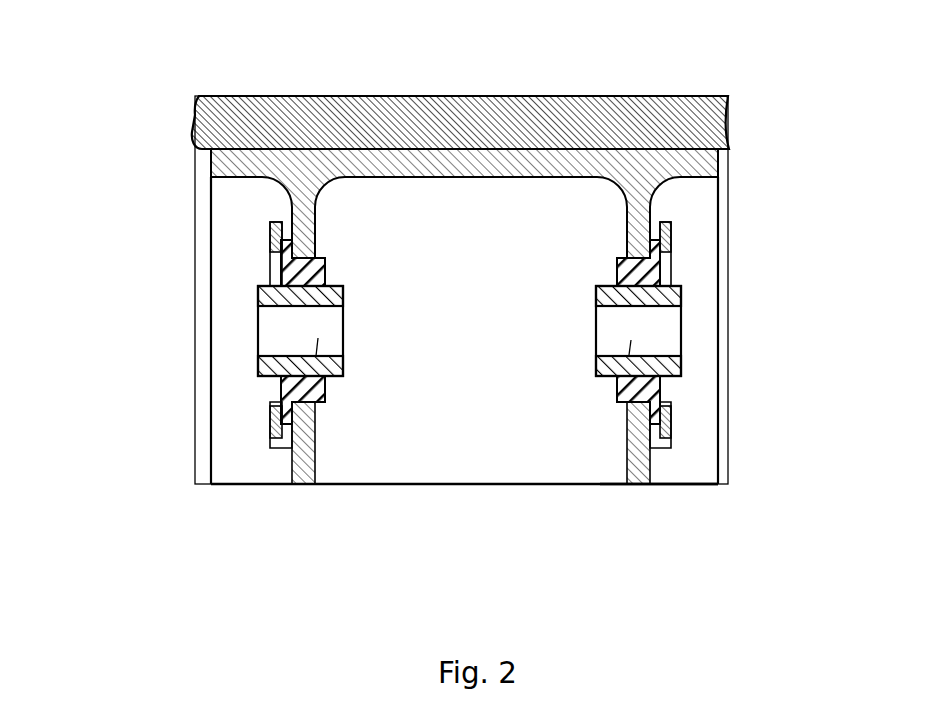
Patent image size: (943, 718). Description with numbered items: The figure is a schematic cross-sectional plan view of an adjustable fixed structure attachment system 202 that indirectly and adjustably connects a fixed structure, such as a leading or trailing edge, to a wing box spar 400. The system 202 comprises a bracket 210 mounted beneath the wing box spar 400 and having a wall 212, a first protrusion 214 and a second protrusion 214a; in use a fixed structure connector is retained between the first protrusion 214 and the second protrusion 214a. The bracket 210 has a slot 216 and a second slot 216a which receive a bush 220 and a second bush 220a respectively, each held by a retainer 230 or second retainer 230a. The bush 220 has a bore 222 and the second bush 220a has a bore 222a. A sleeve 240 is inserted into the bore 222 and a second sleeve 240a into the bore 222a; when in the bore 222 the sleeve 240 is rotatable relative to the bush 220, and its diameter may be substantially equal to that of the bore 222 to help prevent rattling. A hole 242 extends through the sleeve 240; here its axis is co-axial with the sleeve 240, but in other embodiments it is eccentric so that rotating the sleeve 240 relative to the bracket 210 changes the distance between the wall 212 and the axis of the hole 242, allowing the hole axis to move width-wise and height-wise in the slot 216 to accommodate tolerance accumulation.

The adjustable fixed structure attachment system 202 is at (152, 131).
The wing box spar 400 is at (267, 96).
The bracket 210 is at (232, 162).
The wall 212 is at (713, 163).
The first protrusion 214 is at (290, 478).
The second protrusion 214a is at (653, 467).
The slot 216 is at (293, 323).
The second slot 216a is at (648, 322).
The bush 220 is at (282, 394).
The second bush 220a is at (652, 273).
The bore 222 is at (320, 403).
The bore 222a is at (620, 378).
The retainer 230 is at (273, 238).
The second retainer 230a is at (671, 236).
The sleeve 240 is at (260, 295).
The second sleeve 240a is at (681, 370).
The hole 242 is at (297, 348).